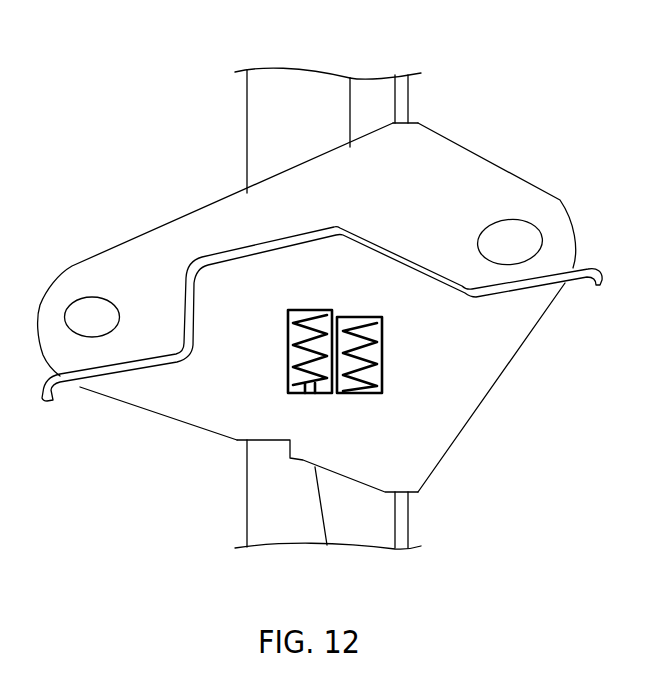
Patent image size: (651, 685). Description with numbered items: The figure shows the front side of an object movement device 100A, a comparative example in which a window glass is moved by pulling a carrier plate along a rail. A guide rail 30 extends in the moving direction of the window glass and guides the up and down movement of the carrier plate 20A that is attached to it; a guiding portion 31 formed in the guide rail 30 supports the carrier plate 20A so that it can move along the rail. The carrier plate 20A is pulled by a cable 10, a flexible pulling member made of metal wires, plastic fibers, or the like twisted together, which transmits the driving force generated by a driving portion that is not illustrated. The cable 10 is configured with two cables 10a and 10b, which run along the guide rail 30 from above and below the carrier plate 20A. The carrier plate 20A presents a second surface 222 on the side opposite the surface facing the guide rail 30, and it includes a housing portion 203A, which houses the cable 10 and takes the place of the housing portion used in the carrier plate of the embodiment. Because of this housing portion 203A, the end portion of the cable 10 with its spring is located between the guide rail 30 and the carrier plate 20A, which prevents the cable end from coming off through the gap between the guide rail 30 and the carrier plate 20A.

The object movement device 100A is at (469, 40).
The cable 10 is at (360, 92).
The cable 10a is at (353, 109).
The cable 10b is at (327, 518).
The carrier plate 20A is at (503, 198).
The housing portion 203A is at (310, 427).
The second surface 222 is at (462, 346).
The guide rail 30 is at (288, 117).
The guiding portion 31 is at (404, 86).